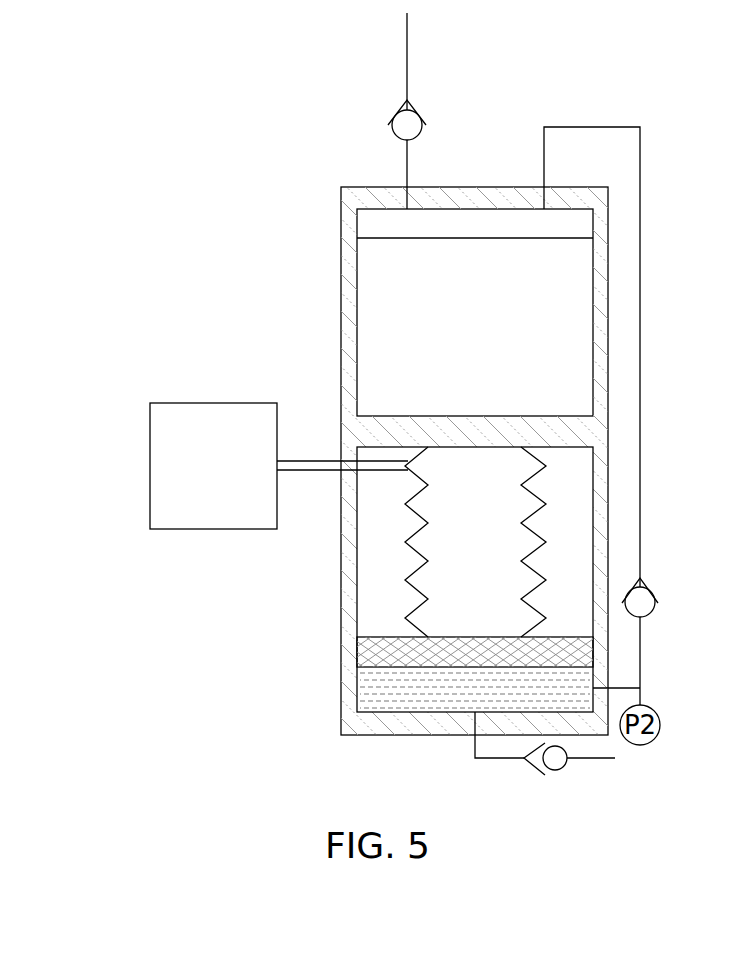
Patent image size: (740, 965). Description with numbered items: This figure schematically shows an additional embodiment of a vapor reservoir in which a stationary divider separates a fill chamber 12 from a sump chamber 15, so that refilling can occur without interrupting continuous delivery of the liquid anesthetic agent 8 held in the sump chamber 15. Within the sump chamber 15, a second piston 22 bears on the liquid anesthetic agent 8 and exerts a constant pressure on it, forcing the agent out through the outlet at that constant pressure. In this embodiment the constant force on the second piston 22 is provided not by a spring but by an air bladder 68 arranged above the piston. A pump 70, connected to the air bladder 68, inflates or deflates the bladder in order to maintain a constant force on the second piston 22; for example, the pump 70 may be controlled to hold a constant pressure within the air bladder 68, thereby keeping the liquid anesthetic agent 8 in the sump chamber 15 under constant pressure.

The fill chamber 12 is at (340, 313).
The liquid anesthetic agent 8 is at (412, 700).
The second piston 22 is at (362, 652).
The sump chamber 15 is at (362, 688).
The air bladder 68 is at (405, 543).
The pump 70 is at (150, 464).